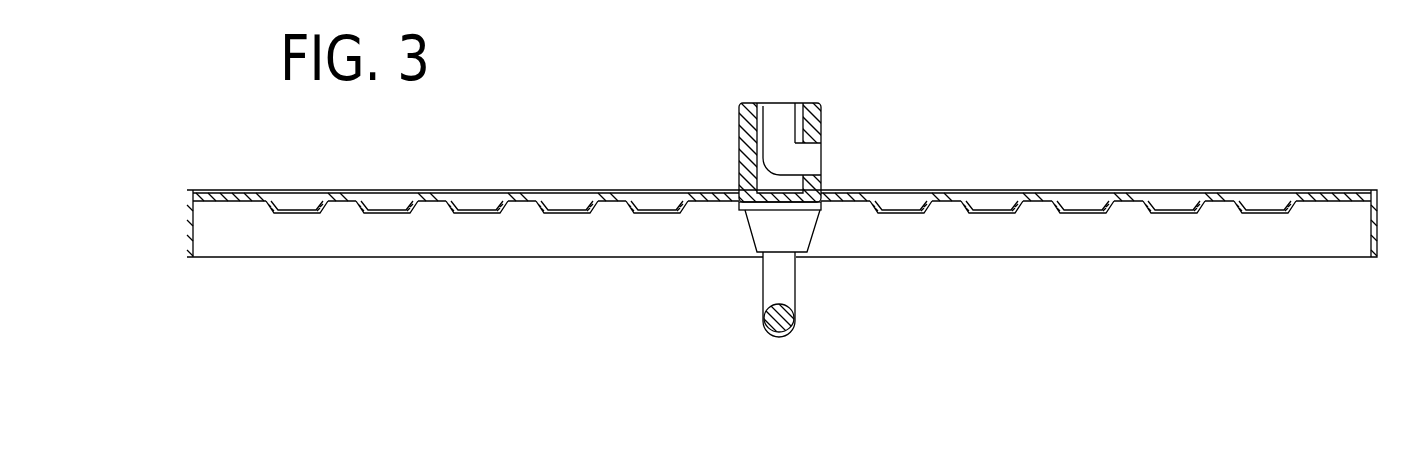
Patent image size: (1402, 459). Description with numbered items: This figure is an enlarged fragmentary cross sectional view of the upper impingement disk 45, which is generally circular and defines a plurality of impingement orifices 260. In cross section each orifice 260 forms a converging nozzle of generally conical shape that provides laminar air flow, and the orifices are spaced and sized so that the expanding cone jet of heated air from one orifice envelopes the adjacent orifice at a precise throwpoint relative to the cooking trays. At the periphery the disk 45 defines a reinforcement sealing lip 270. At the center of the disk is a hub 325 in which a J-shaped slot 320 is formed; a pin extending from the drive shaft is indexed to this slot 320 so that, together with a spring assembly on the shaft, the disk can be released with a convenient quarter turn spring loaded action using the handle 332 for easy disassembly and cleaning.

The upper impingement disk 45 is at (241, 173).
The impingement orifices 260 is at (483, 202).
The reinforcement sealing lip 270 is at (568, 228).
The J-shaped slot 320 is at (800, 165).
The hub 325 is at (818, 130).
The handle 332 is at (783, 288).